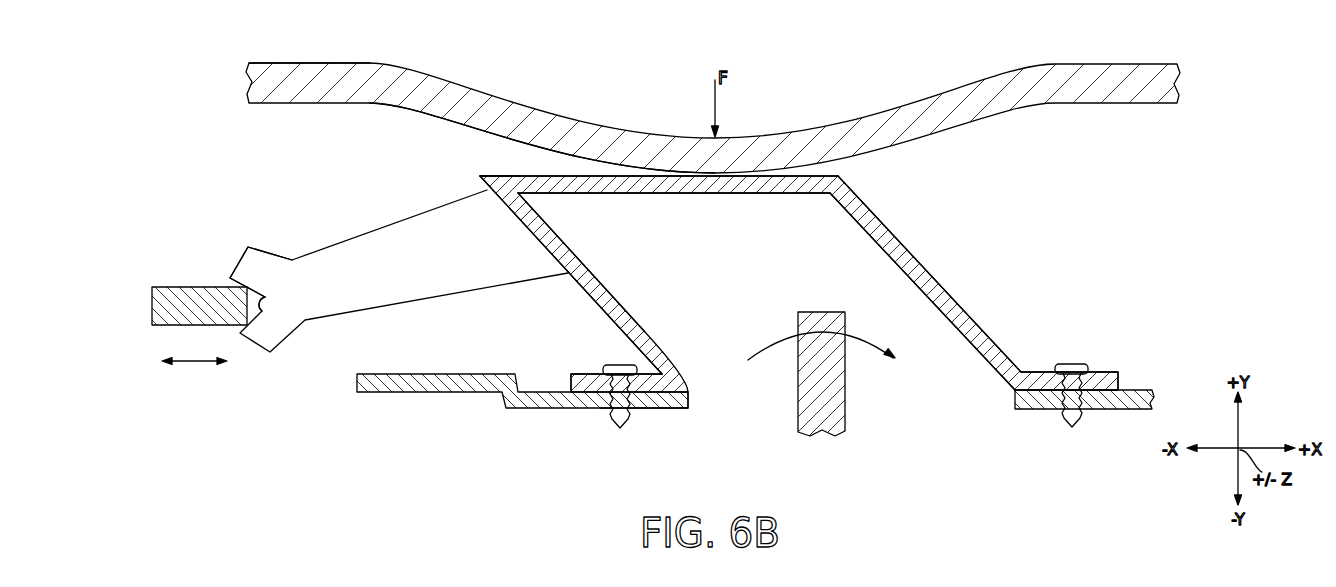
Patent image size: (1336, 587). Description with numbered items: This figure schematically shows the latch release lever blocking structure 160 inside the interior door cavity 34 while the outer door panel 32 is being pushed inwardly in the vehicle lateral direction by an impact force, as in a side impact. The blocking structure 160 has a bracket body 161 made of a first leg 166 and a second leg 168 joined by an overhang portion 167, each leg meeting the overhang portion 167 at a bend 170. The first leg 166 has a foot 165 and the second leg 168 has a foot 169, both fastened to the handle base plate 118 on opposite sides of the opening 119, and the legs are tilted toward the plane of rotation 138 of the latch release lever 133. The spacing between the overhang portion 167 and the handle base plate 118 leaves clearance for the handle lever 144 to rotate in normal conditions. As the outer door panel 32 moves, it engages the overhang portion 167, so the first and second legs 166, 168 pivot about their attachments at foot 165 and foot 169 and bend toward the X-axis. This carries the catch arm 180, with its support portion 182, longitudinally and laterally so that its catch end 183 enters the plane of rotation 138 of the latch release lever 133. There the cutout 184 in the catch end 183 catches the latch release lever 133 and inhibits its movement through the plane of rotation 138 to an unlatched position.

The outer door panel 32 is at (933, 103).
The interior door cavity 34 is at (230, 130).
The catch arm 180 is at (427, 140).
The latch release lever blocking structure 160 is at (1060, 272).
The overhang portion 167 is at (817, 173).
The bend 170 is at (478, 176).
The second leg 168 is at (620, 302).
The bracket body 161 is at (925, 270).
The first leg 166 is at (988, 336).
The foot 169 is at (580, 374).
The foot 165 is at (1108, 372).
The handle base plate 118 is at (502, 407).
The opening 119 is at (690, 402).
The support portion 182 is at (375, 232).
The catch end 183 is at (273, 257).
The cutout 184 is at (270, 309).
The latch release lever 133 is at (193, 287).
The plane of rotation 138 is at (195, 364).
The handle lever 144 is at (818, 312).